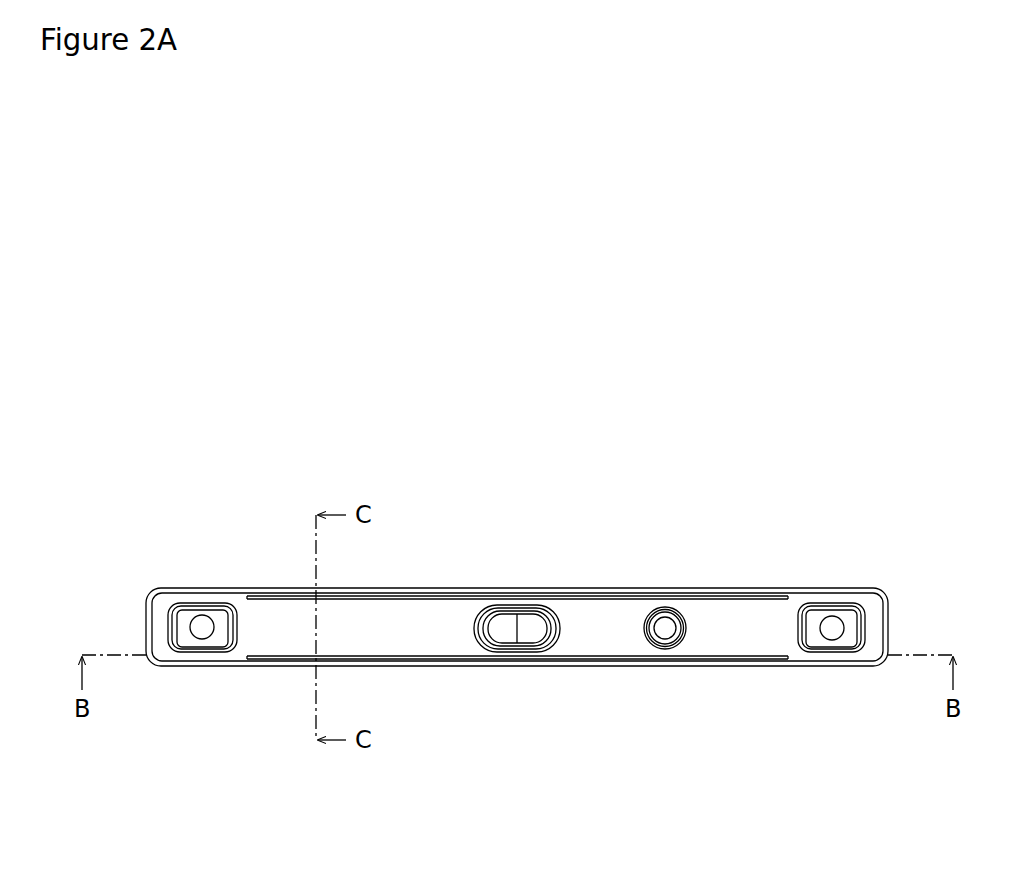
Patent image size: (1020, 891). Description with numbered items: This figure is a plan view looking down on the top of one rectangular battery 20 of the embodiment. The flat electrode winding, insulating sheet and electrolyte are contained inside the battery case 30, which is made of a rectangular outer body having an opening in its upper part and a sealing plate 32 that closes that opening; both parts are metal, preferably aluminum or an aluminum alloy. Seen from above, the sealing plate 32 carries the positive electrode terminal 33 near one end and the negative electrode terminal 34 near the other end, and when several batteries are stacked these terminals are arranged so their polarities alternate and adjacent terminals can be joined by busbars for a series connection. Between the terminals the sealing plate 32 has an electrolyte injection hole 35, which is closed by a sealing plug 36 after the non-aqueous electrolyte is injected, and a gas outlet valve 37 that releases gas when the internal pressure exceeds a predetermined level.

The rectangular battery 20 is at (534, 540).
The battery case 30 is at (729, 591).
The sealing plate 32 is at (595, 620).
The positive electrode terminal 33 is at (832, 626).
The negative electrode terminal 34 is at (202, 626).
The electrolyte injection hole 35 is at (665, 626).
The sealing plug 36 is at (668, 631).
The gas outlet valve 37 is at (507, 640).